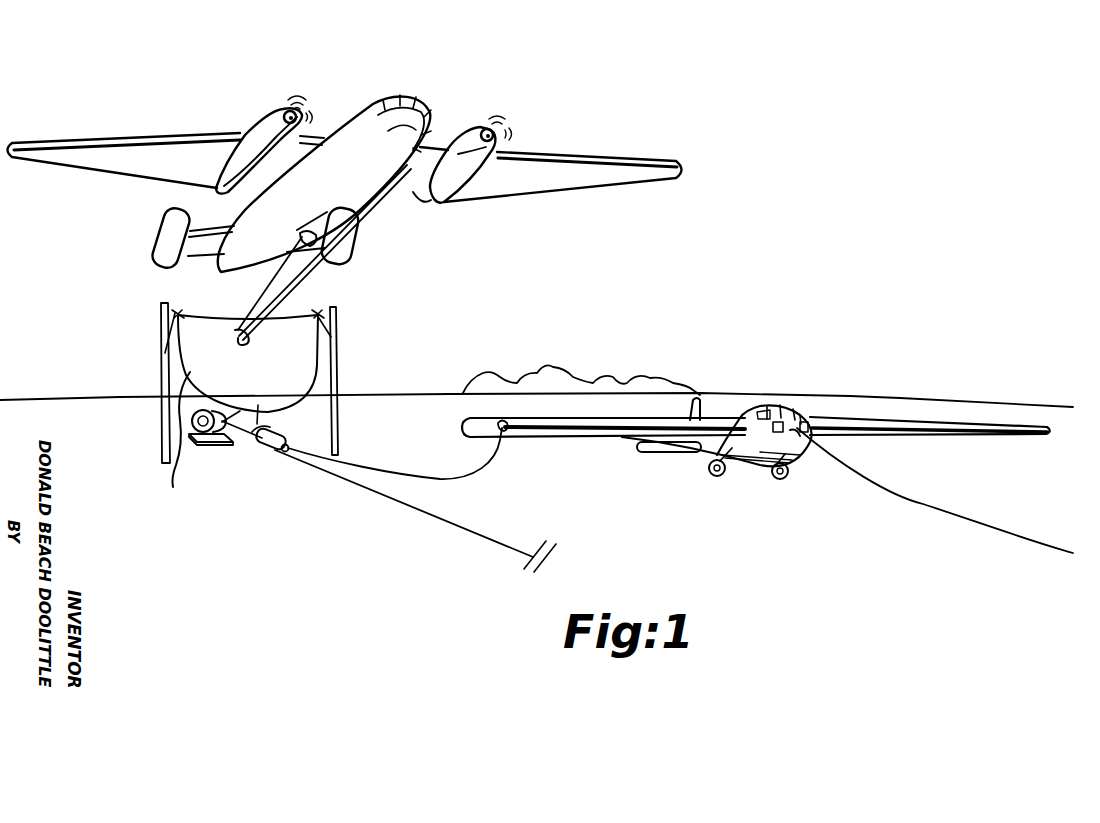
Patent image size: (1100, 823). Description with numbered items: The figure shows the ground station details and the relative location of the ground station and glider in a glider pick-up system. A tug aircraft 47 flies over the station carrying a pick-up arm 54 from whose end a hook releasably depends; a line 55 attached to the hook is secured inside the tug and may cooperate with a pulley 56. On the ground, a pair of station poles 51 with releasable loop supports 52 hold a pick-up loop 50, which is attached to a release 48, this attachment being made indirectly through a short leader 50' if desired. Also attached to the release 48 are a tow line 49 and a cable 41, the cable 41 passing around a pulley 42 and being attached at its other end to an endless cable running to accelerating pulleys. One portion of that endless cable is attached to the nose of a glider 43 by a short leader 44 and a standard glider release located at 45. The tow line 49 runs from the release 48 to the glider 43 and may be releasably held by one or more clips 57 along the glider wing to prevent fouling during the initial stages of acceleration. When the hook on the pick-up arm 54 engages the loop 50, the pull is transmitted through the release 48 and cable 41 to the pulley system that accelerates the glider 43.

The cable 41 is at (414, 509).
The pulley 42 is at (214, 443).
The glider 43 is at (700, 466).
The short leader 44 is at (926, 506).
The glider release location 45 is at (795, 432).
The tug aircraft 47 is at (361, 168).
The release 48 is at (278, 455).
The tow line 49 is at (493, 456).
The pick-up loop 50 is at (238, 413).
The short leader 50' is at (272, 424).
The station poles 51 is at (162, 376).
The releasable loop supports 52 is at (178, 312).
The pick-up arm 54 is at (288, 277).
The line 55 is at (239, 306).
The pulley 56 is at (303, 235).
The clips 57 is at (503, 424).